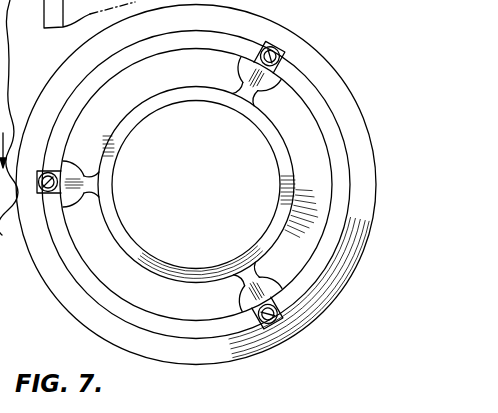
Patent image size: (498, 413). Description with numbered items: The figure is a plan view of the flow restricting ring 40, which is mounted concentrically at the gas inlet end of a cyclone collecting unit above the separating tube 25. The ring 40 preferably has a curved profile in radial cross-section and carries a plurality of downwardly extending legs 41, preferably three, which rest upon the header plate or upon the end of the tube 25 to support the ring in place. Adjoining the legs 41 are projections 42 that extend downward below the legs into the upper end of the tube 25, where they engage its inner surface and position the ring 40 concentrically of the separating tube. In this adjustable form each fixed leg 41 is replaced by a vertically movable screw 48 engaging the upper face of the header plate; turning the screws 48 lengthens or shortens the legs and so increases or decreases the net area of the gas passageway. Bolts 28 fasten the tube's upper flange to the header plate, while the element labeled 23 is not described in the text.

The adjacent member 23 is at (158, 14).
The separating tube 25 is at (120, 62).
The bolts 28 is at (4, 78).
The ring 40 is at (371, 116).
The legs 41 is at (42, 193).
The projections 42 is at (85, 182).
The screws 48 is at (44, 174).